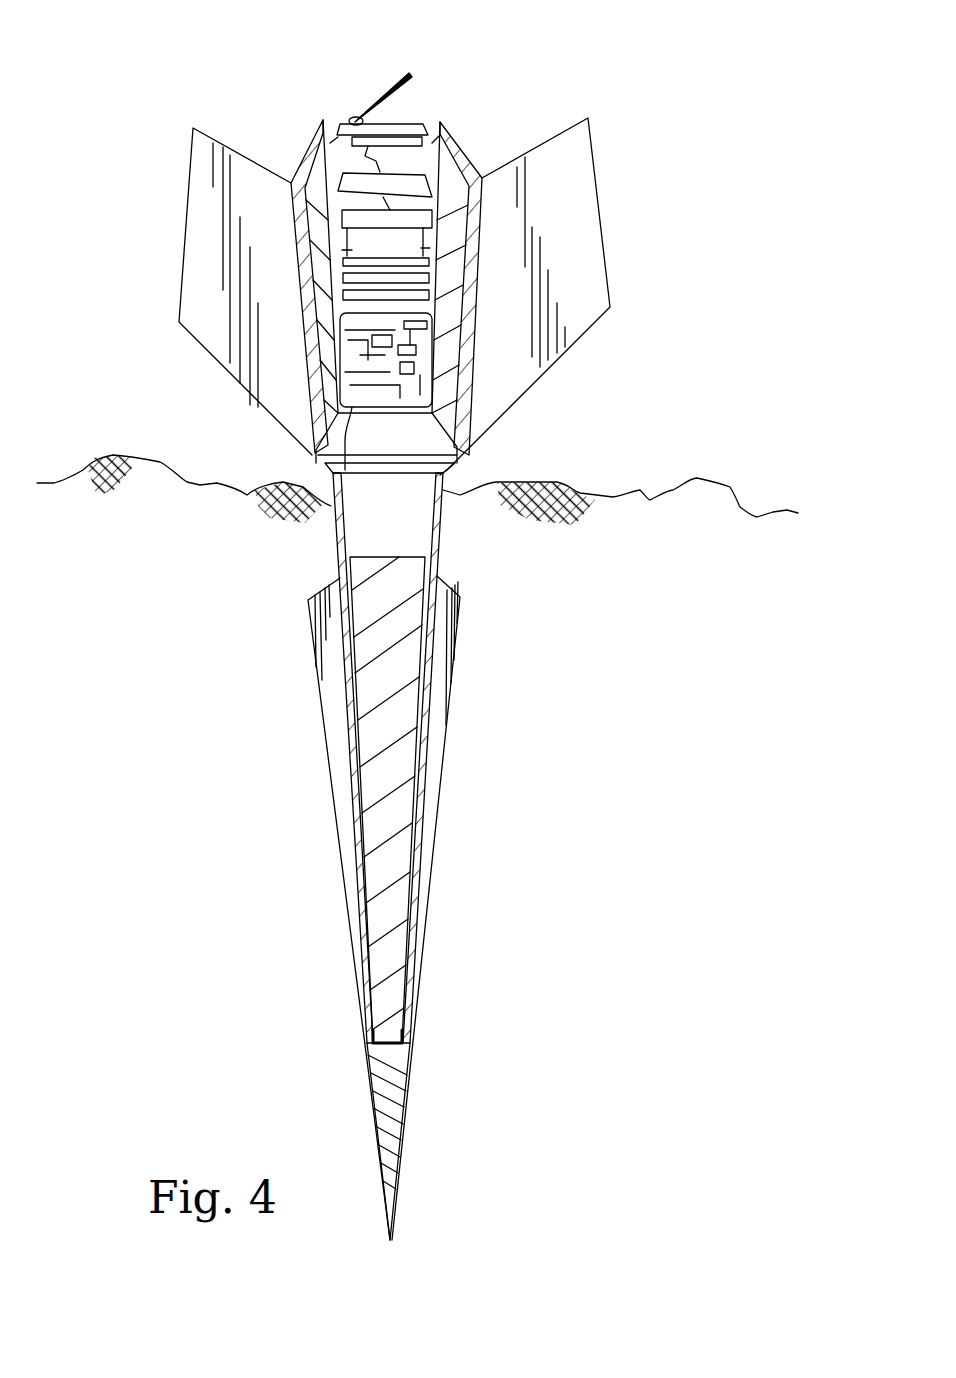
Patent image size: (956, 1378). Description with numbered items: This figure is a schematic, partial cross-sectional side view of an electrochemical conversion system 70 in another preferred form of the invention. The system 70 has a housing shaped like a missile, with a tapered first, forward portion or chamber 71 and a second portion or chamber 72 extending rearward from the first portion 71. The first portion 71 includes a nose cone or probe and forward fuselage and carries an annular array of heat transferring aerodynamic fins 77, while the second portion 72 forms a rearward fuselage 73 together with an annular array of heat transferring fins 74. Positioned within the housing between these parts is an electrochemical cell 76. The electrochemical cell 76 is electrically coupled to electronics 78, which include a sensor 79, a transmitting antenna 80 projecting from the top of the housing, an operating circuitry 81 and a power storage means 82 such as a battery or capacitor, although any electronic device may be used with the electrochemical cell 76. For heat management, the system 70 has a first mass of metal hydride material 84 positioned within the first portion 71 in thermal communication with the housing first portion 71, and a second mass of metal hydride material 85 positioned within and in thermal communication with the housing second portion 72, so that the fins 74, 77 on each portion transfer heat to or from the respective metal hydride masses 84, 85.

The electrochemical conversion system 70 is at (277, 885).
The first forward portion or chamber 71 is at (449, 983).
The second portion or chamber 72 is at (539, 80).
The rearward fuselage 73 is at (305, 143).
The heat transferring fins 74 is at (213, 140).
The electrochemical cell 76 is at (359, 495).
The heat transferring aerodynamic fins 77 is at (447, 660).
The electronics 78 is at (282, 322).
The sensor 79 is at (442, 152).
The transmitting antenna 80 is at (372, 103).
The operating circuitry 81 is at (350, 366).
The power storage means 82 is at (343, 263).
The first mass of metal hydride material 84 is at (370, 722).
The second mass of metal hydride material 85 is at (430, 178).